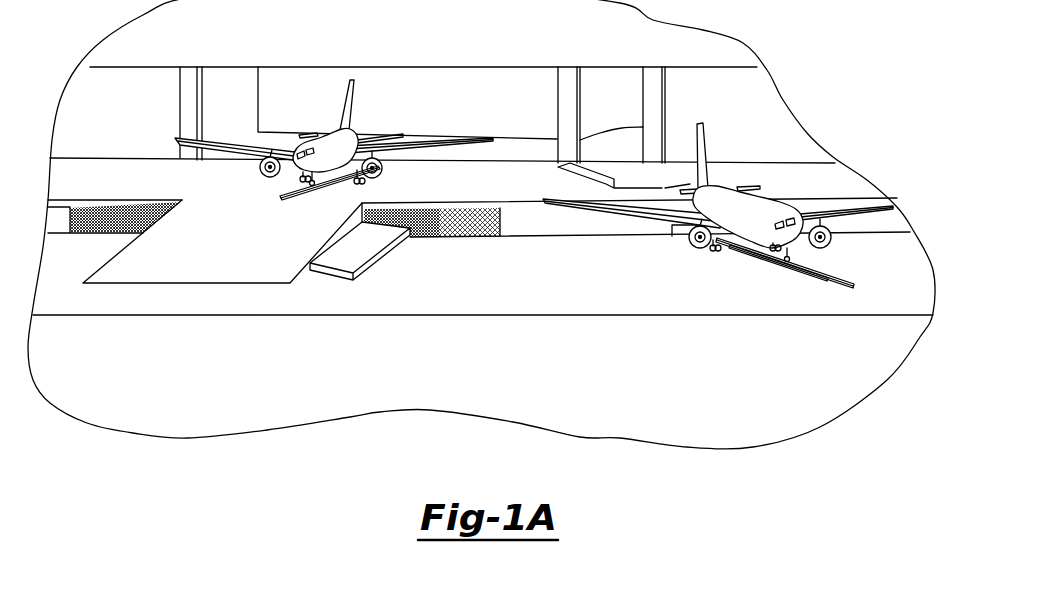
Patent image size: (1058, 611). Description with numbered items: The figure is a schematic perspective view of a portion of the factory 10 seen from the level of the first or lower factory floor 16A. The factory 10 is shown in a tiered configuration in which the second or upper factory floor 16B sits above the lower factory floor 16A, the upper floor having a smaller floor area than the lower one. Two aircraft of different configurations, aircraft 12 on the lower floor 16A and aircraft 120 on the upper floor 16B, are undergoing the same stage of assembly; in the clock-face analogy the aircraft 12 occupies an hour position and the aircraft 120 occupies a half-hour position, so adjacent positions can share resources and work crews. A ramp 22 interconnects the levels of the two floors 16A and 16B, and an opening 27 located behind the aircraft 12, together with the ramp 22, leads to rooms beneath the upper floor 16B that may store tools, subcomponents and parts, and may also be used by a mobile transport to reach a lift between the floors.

The factory 10 is at (840, 78).
The aircraft 12 is at (763, 210).
The aircraft 120 is at (348, 140).
The first/lower factory floor 16A is at (535, 288).
The second/upper factory floor 16B is at (522, 180).
The ramp 22 is at (247, 253).
The opening 27 is at (441, 246).